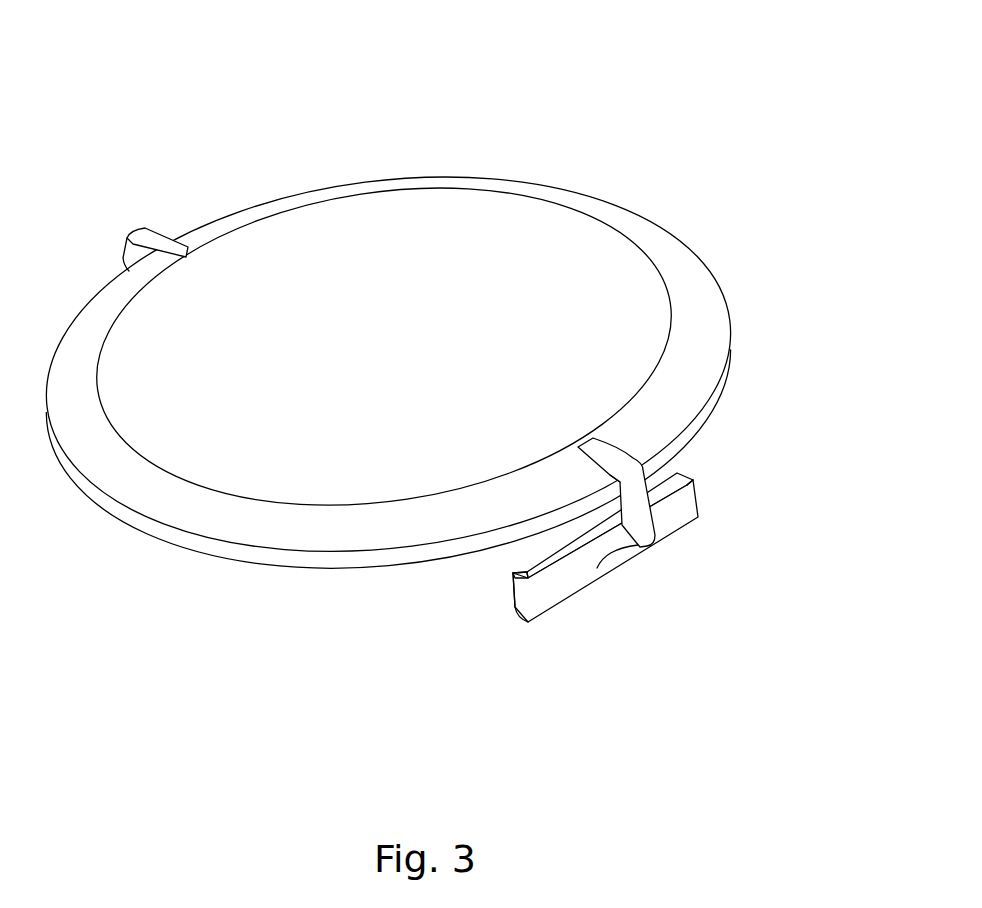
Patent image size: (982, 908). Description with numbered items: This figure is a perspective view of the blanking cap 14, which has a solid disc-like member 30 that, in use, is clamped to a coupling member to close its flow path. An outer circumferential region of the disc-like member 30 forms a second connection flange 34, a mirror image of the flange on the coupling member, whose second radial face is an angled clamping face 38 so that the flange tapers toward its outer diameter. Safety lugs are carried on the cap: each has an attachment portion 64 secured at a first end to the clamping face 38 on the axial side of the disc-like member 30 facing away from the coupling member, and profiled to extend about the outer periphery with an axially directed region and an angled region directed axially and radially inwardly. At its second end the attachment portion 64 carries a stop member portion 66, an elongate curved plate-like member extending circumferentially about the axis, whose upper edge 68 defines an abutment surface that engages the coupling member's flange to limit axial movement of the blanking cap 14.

The blanking cap 14 is at (426, 334).
The disc-like member 30 is at (440, 212).
The second connection flange 34 is at (697, 290).
The clamping face 38 is at (217, 513).
The attachment portion 64 is at (157, 235).
The stop member portion 66 is at (565, 597).
The upper edge 68 is at (550, 553).